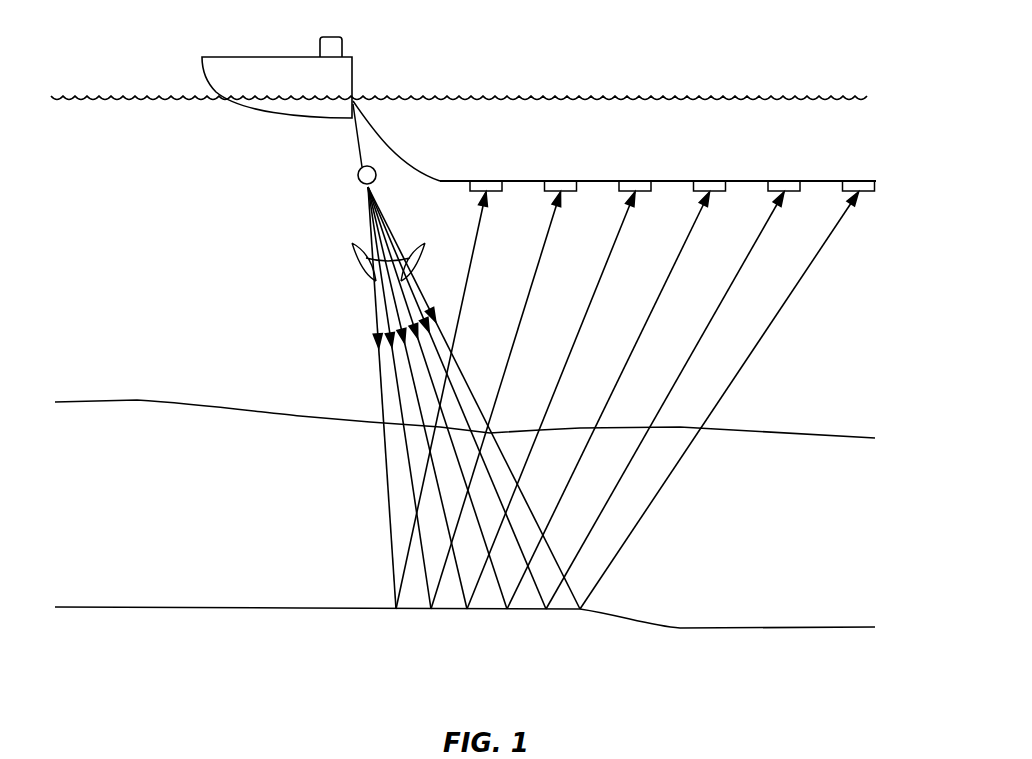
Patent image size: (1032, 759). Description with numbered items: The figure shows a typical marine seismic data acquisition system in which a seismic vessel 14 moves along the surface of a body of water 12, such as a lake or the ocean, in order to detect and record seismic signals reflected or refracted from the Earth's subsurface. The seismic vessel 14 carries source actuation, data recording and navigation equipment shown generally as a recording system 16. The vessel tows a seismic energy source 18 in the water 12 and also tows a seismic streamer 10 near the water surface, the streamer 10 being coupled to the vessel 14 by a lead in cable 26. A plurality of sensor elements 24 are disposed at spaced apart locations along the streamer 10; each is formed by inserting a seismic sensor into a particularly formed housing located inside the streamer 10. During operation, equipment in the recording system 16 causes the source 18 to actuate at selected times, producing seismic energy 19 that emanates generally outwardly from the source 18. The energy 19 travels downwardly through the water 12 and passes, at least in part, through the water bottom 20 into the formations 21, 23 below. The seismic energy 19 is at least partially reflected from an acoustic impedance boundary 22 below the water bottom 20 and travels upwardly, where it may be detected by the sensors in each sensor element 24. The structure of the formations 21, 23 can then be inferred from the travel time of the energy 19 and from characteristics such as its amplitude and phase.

The seismic streamer 10 is at (445, 187).
The body of water 12 is at (209, 241).
The seismic vessel 14 is at (271, 57).
The recording system 16 is at (335, 37).
The seismic energy source 18 is at (358, 177).
The seismic energy 19 is at (352, 243).
The water bottom 20 is at (126, 402).
The formation 21 is at (206, 507).
The acoustic impedance boundary 22 is at (127, 607).
The formation 23 is at (206, 671).
The sensor element 24 is at (487, 181).
The lead in cable 26 is at (398, 153).